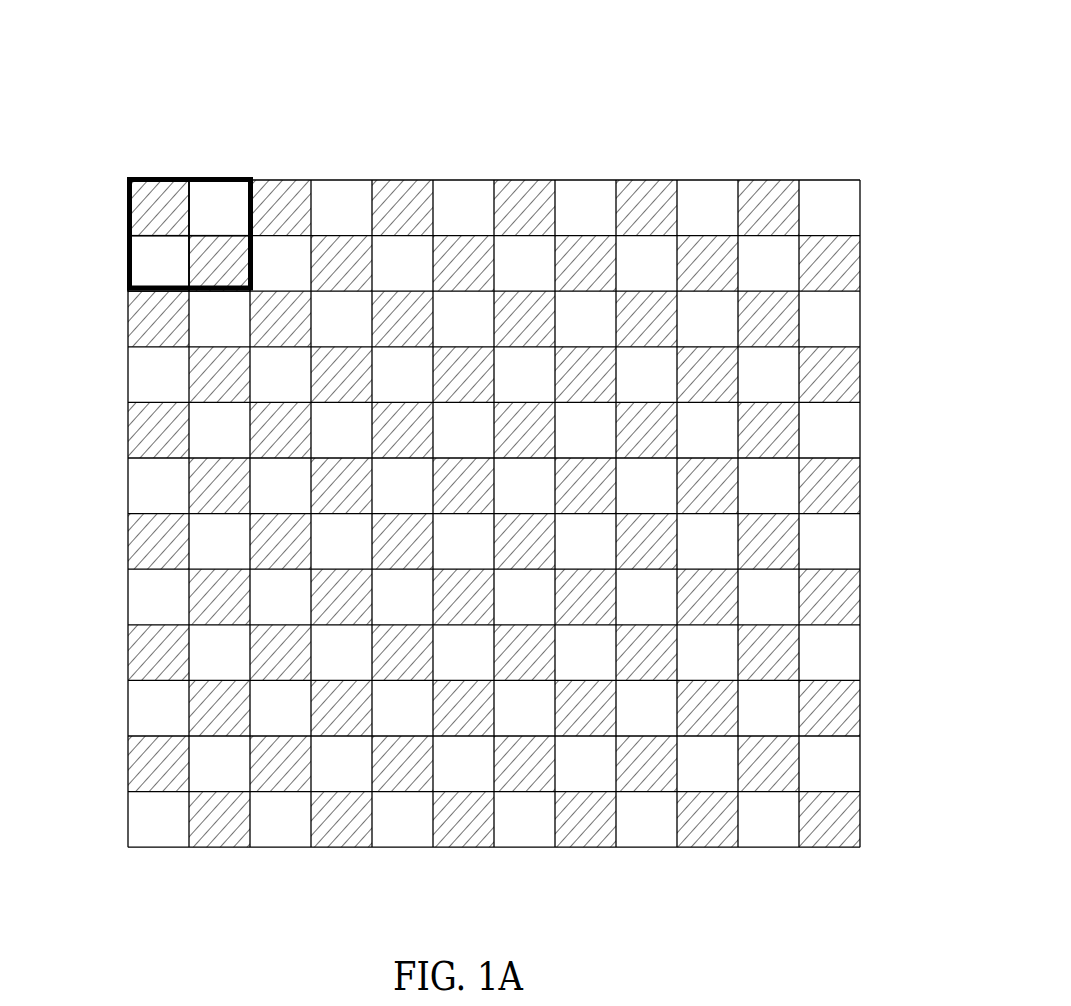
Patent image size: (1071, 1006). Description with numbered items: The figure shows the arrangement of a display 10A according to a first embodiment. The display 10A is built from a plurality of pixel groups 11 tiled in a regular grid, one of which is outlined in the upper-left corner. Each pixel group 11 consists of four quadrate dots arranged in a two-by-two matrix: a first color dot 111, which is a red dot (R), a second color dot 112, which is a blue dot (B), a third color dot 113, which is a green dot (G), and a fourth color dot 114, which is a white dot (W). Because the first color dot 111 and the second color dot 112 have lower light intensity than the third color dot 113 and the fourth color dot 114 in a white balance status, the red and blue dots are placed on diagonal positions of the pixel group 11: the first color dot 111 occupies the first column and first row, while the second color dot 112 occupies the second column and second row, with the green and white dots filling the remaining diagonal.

The display 10A is at (490, 423).
The pixel group 11 is at (158, 161).
The first color dot 111 is at (166, 178).
The second color dot 112 is at (210, 286).
The third color dot 113 is at (138, 247).
The fourth color dot 114 is at (208, 180).